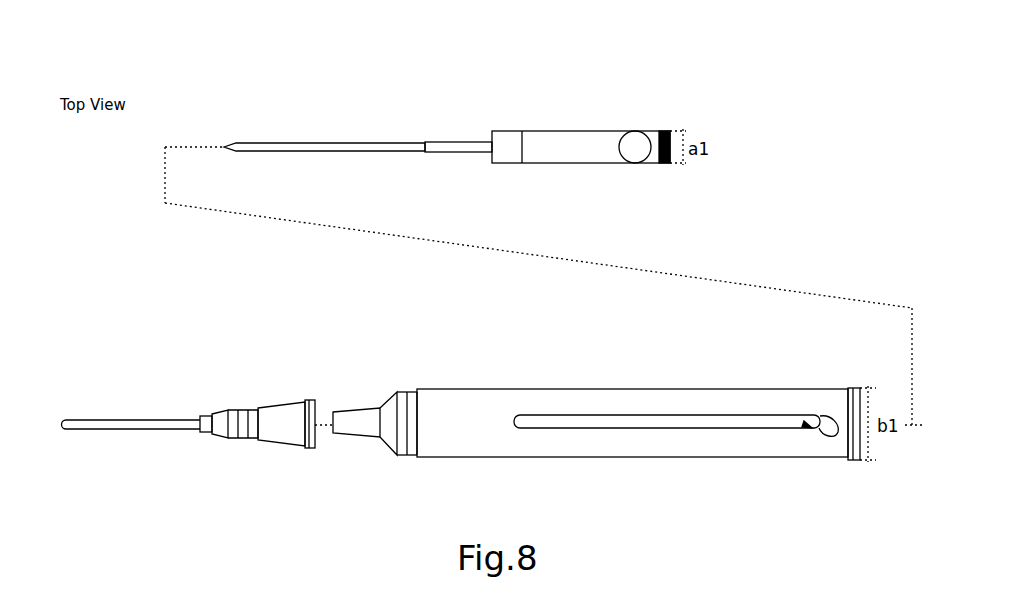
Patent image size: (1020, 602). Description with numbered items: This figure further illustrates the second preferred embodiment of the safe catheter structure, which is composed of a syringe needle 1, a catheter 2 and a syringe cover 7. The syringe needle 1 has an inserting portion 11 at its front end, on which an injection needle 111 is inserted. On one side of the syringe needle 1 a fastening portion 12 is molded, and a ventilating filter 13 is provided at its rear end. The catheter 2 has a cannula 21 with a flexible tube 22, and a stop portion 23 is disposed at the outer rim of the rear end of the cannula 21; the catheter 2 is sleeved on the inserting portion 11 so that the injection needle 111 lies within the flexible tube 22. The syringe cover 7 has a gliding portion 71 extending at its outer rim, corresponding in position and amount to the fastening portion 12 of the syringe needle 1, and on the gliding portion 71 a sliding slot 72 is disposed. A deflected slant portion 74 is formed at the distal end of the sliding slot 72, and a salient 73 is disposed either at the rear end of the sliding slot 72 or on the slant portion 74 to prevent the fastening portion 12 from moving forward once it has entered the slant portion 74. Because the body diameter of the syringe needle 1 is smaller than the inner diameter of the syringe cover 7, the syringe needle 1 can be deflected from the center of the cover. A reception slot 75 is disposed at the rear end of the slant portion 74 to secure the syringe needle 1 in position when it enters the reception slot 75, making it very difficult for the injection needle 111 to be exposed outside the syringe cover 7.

The syringe needle 1 is at (608, 100).
The inserting portion 11 is at (482, 135).
The injection needle 111 is at (325, 147).
The fastening portion 12 is at (645, 160).
The ventilating filter 13 is at (661, 130).
The catheter 2 is at (170, 383).
The cannula 21 is at (210, 415).
The flexible tube 22 is at (100, 419).
The stop portion 23 is at (318, 440).
The syringe cover 7 is at (415, 378).
The gliding portion 71 is at (505, 390).
The sliding slot 72 is at (595, 400).
The salient 73 is at (808, 426).
The slant portion 74 is at (830, 425).
The reception slot 75 is at (852, 444).